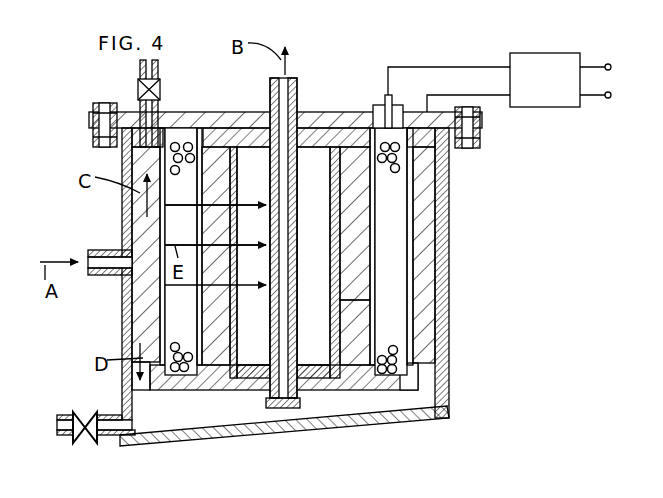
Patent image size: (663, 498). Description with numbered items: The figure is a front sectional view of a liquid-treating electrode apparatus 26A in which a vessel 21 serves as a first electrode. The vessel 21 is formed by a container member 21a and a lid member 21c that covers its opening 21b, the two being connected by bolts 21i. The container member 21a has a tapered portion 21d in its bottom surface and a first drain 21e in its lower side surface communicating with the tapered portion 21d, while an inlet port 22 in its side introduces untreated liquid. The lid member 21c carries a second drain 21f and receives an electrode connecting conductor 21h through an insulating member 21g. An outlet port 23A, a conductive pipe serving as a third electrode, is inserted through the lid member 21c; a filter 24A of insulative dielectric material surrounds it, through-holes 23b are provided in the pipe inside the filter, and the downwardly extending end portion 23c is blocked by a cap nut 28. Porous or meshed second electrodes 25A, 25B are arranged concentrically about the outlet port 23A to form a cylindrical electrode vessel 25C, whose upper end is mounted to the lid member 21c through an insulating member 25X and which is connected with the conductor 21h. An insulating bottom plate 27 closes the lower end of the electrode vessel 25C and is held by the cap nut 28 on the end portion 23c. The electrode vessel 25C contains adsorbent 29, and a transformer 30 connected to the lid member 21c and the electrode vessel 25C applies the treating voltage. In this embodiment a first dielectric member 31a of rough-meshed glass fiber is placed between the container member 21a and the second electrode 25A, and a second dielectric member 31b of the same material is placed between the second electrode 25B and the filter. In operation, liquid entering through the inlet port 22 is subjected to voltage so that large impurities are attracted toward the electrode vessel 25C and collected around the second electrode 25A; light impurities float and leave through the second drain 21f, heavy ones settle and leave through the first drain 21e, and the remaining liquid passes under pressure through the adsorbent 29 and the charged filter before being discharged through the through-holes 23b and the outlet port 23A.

The vessel 21 is at (448, 271).
The container member 21a is at (445, 321).
The opening 21b is at (432, 162).
The lid member 21c is at (195, 117).
The tapered portion 21d is at (168, 430).
The first drain 21e is at (103, 432).
The second drain 21f is at (140, 70).
The insulating member 21g is at (373, 110).
The electrode connecting conductor 21h is at (384, 94).
The bolts 21i is at (105, 102).
The inlet port 22 is at (107, 272).
The outlet port 23A is at (288, 82).
The through-holes 23b is at (294, 256).
The end portion 23c is at (300, 403).
The filter 24A is at (482, 229).
The second electrode 25A is at (341, 262).
The second electrode 25B is at (377, 204).
The electrode vessel 25C is at (400, 297).
The insulating member 25X is at (342, 138).
The electrode apparatus 26A is at (123, 338).
The bottom plate 27 is at (220, 375).
The cap nut 28 is at (268, 401).
The adsorbent 29 is at (178, 372).
The transformer 30 is at (540, 96).
The first dielectric member 31a is at (468, 255).
The second dielectric member 31b is at (348, 318).